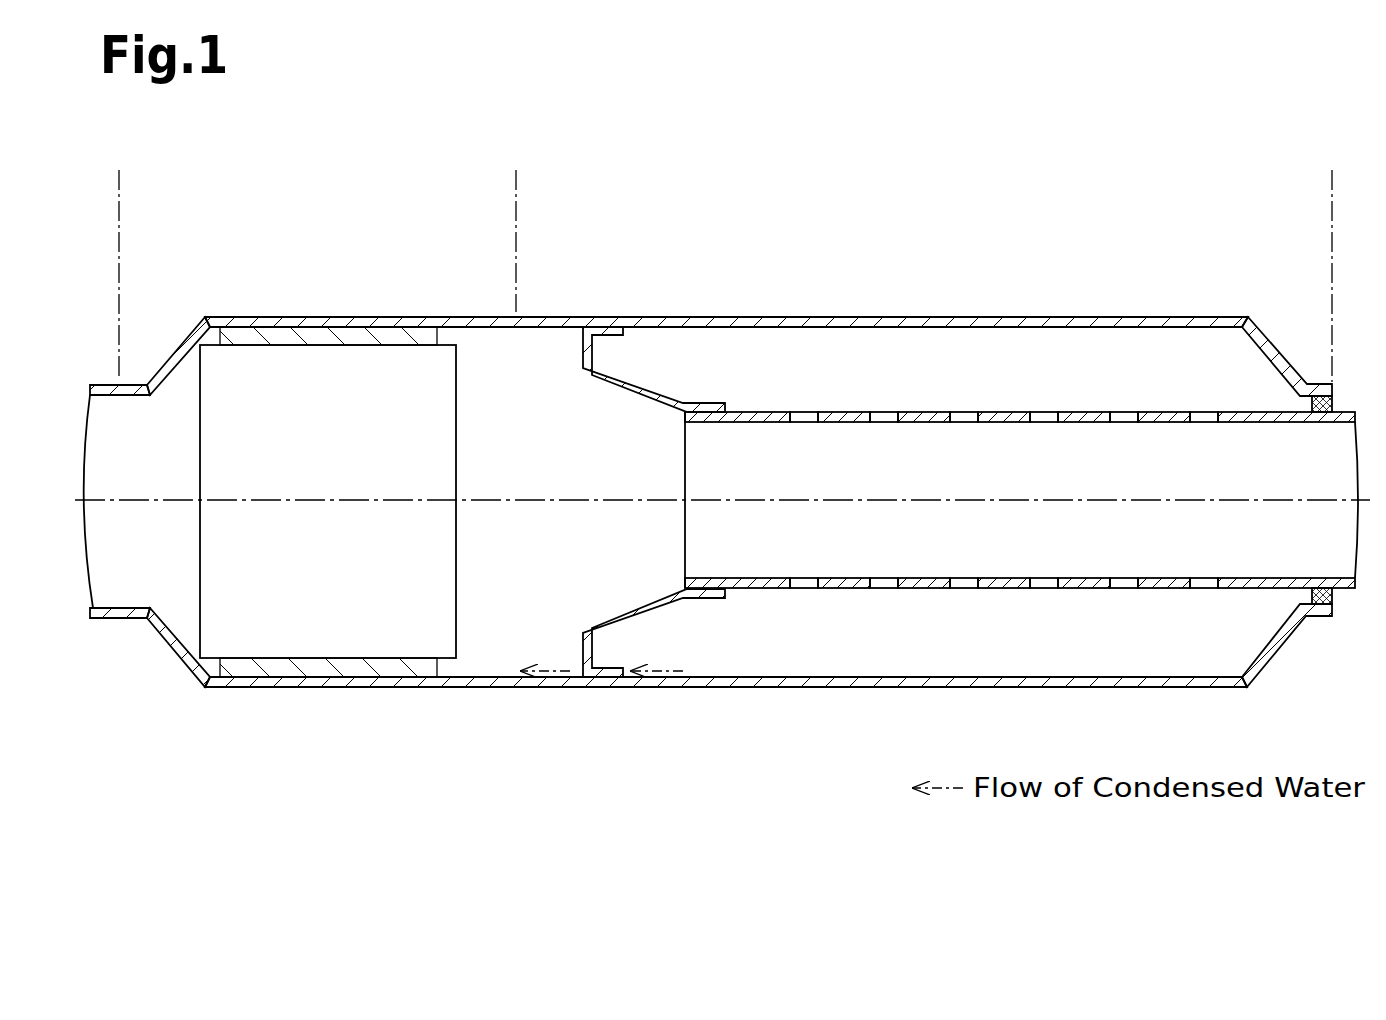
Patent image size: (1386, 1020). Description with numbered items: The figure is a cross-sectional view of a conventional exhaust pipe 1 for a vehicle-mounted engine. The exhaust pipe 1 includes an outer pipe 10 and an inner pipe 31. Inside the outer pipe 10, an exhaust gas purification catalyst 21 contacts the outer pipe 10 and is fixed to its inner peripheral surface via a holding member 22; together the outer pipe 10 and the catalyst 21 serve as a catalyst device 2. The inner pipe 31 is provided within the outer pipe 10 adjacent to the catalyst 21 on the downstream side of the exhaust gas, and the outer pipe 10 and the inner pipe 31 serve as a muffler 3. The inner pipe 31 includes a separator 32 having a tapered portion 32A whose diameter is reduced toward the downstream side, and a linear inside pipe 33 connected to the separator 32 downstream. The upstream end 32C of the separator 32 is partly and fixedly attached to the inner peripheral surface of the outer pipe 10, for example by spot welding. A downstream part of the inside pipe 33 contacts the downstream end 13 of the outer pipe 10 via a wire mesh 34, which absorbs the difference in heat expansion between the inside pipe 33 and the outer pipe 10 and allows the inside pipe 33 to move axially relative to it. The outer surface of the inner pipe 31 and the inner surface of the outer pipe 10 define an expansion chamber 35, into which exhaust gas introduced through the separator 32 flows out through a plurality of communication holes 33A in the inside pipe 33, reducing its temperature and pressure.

The exhaust pipe 1 is at (725, 779).
The catalyst device 2 is at (516, 182).
The muffler 3 is at (1332, 182).
The outer pipe 10 is at (853, 317).
The end of the outer pipe 13 is at (1316, 628).
The exhaust gas purification catalyst 21 is at (457, 531).
The holding member 22 is at (438, 336).
The inner pipe 31 is at (603, 430).
The separator 32 is at (621, 391).
The tapered portion 32A is at (668, 607).
The end of the separator 32C is at (612, 680).
The inside pipe 33 is at (767, 578).
The communication holes 33A is at (1113, 582).
The wire mesh 34 is at (1323, 588).
The expansion chamber 35 is at (912, 390).